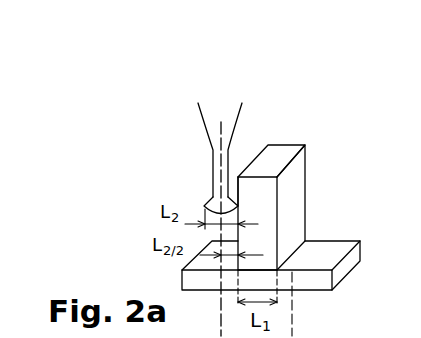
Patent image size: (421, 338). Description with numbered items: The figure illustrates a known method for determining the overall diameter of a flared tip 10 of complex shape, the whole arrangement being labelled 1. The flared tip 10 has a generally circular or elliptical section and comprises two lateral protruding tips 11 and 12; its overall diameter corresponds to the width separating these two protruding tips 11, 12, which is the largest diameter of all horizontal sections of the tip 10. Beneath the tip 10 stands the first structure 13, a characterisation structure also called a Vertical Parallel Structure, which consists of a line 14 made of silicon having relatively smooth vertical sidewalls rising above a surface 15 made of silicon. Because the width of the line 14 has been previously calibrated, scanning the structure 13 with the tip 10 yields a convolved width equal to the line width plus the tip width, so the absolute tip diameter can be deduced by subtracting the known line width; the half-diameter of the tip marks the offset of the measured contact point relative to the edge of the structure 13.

The device 1 is at (301, 181).
The flared tip 10 is at (234, 211).
The lateral protruding tip 11 is at (201, 210).
The lateral protruding tip 12 is at (238, 208).
The first structure 13 is at (303, 171).
The line 14 is at (290, 228).
The surface 15 is at (340, 242).